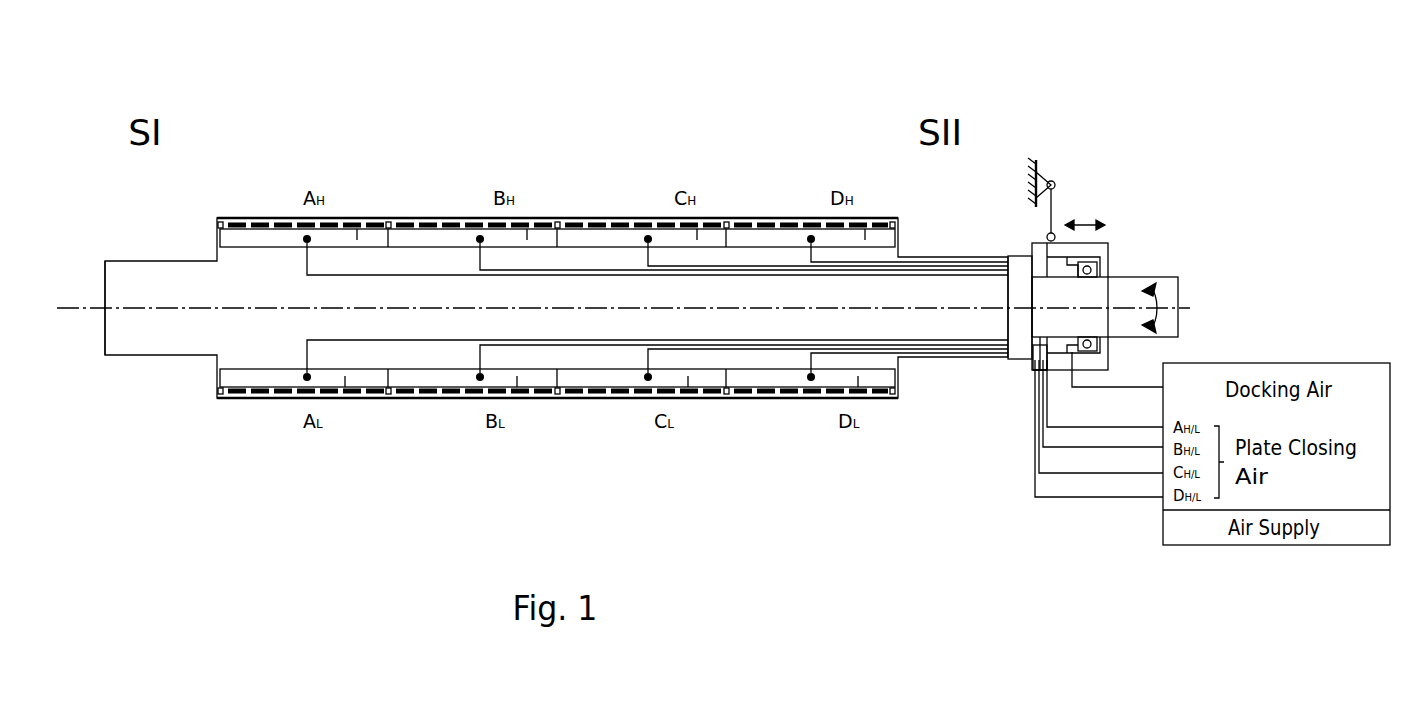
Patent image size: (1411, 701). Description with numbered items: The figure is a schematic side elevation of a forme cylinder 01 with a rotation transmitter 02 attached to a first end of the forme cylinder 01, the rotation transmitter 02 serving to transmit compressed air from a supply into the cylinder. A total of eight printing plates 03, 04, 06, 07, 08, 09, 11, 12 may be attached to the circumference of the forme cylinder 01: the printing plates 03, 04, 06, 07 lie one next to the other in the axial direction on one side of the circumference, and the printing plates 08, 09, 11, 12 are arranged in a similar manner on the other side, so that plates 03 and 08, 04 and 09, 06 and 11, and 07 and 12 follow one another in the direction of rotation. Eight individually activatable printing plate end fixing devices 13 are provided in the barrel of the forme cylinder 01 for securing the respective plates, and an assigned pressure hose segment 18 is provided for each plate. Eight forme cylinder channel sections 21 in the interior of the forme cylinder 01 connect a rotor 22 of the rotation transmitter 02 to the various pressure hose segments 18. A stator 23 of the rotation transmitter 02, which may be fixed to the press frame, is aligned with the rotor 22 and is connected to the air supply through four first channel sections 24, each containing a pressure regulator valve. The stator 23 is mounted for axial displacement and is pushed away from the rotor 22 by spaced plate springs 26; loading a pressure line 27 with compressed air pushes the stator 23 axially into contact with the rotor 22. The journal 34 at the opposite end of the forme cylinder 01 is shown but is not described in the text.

The forme cylinder 01 is at (590, 86).
The rotation transmitter 02 is at (1142, 184).
The printing plate 03 is at (266, 218).
The printing plate 04 is at (437, 218).
The printing plate 06 is at (608, 218).
The printing plate 07 is at (785, 218).
The printing plate 08 is at (270, 398).
The printing plate 09 is at (440, 398).
The printing plate 11 is at (612, 398).
The printing plate 12 is at (790, 398).
The printing plate end fixing device 13 is at (236, 218).
The pressure hose segment 18 is at (357, 218).
The forme cylinder channel section 21 is at (355, 276).
The rotor 22 is at (1022, 257).
The stator 23 is at (1040, 372).
The first channel section 24 is at (1110, 447).
The plate spring 26 is at (1105, 260).
The pressure line 27 is at (1118, 387).
The cylinder journal 34 is at (85, 308).